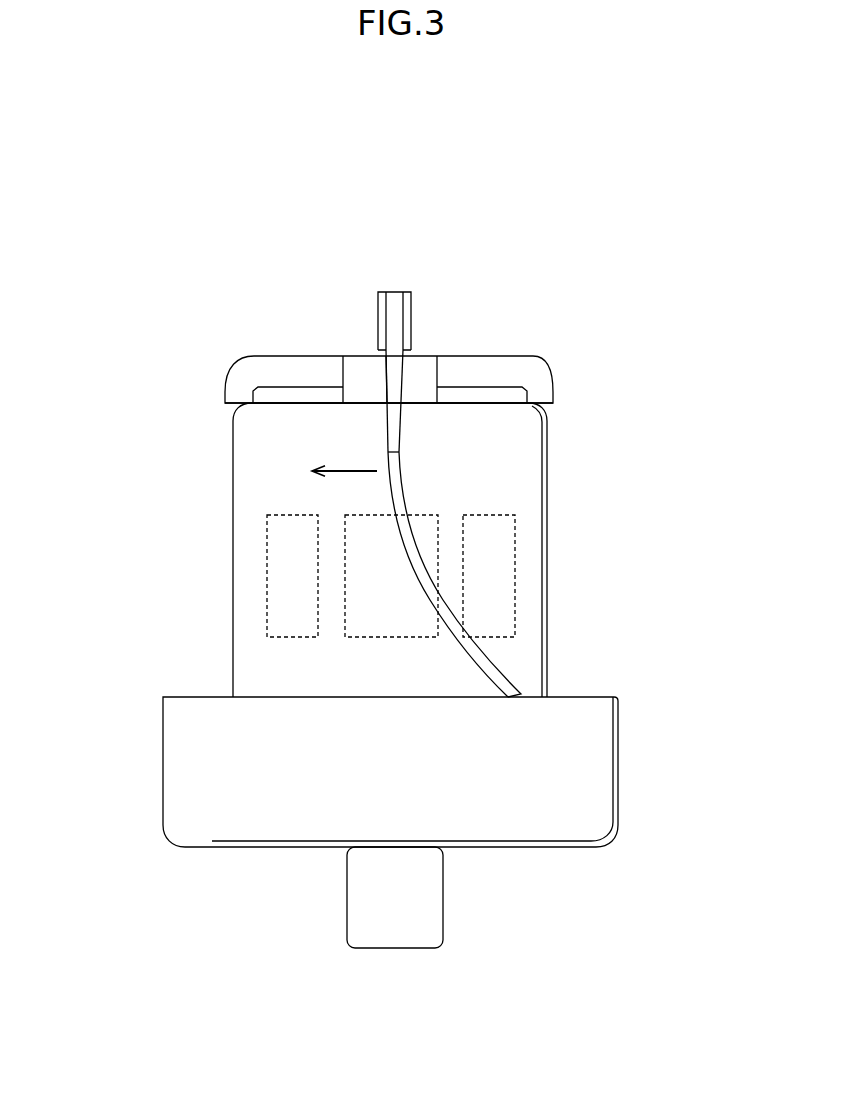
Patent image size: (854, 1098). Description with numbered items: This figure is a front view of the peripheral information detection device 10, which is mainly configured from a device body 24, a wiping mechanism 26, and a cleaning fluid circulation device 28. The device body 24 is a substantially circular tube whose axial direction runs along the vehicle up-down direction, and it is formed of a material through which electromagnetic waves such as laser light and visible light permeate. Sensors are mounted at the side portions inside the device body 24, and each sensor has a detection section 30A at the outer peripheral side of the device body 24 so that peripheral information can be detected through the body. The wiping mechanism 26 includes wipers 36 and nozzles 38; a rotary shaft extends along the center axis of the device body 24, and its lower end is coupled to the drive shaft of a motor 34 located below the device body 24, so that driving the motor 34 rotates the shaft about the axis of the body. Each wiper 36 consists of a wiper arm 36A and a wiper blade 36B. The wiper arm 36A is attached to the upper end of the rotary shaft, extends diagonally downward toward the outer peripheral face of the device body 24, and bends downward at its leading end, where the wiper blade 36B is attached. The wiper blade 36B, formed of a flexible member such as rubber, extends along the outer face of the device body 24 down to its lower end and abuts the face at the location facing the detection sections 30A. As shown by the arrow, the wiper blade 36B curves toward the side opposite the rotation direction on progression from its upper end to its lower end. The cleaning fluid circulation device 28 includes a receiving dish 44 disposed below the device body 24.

The peripheral information detection device 10 is at (522, 235).
The device body 24 is at (552, 462).
The wiping mechanism 26 is at (413, 350).
The cleaning fluid circulation device 28 is at (620, 765).
The detection section 30A is at (267, 573).
The motor 34 is at (444, 907).
The wiper 36 is at (412, 373).
The wiper arm 36A is at (384, 380).
The wiper blade 36B is at (404, 484).
The nozzle 38 is at (257, 352).
The receiving dish 44 is at (620, 787).